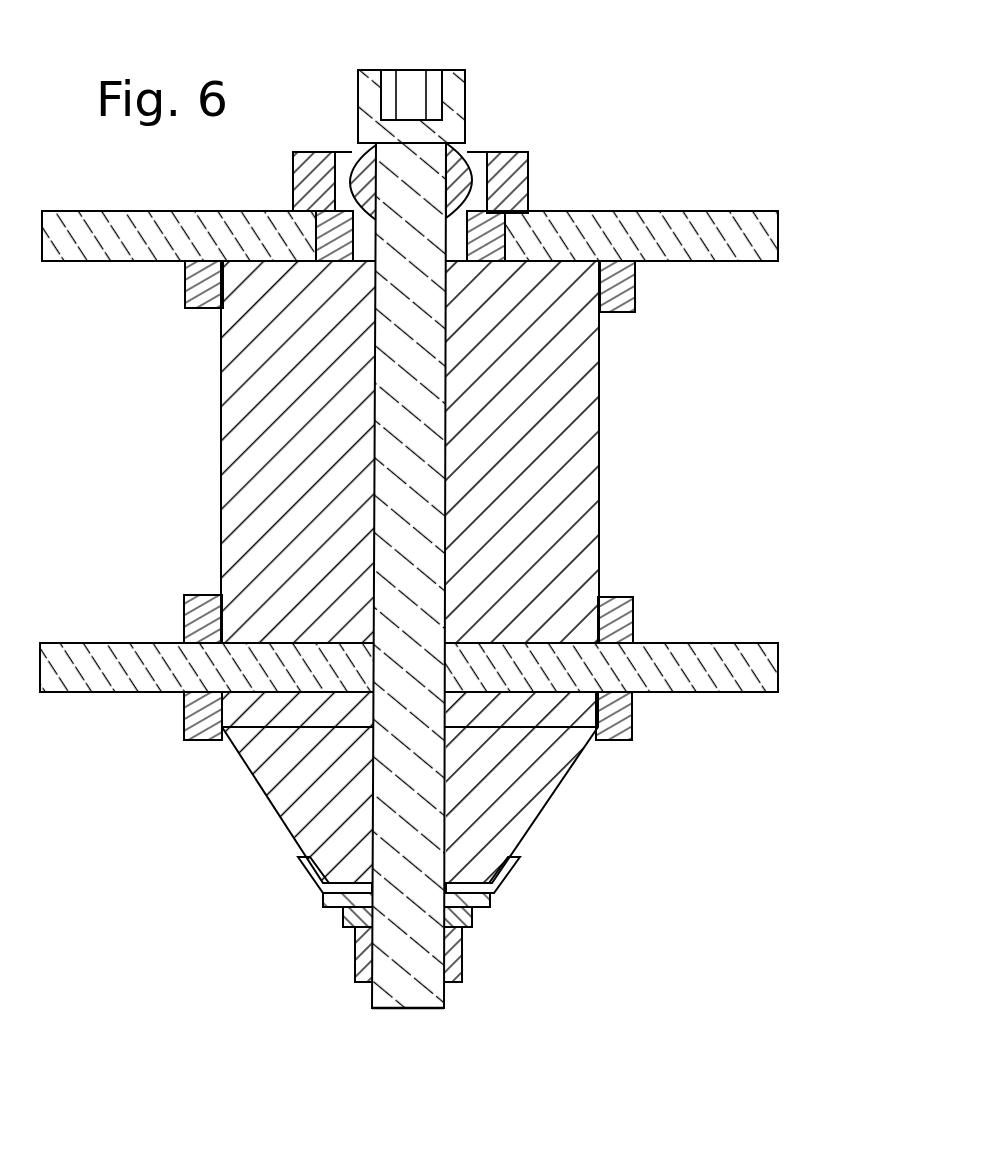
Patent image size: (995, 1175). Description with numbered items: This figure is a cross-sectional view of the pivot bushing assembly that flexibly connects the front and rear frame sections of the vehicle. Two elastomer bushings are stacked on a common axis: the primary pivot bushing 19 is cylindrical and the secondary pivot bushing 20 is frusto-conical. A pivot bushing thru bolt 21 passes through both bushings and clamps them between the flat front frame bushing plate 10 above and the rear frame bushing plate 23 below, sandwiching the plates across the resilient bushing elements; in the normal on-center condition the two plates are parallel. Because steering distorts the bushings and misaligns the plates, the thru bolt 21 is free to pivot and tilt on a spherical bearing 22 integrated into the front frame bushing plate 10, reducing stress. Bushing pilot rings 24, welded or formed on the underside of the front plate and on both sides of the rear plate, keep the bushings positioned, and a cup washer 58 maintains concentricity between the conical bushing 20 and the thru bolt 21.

The front frame bushing plate 10 is at (647, 217).
The pivot bushing (cylindrical) 19 is at (588, 458).
The pivot bushing (conical) 20 is at (547, 790).
The pivot bushing thru bolt 21 is at (455, 87).
The spherical bearing (thru bolt) 22 is at (467, 152).
The rear frame bushing plate 23 is at (697, 660).
The bushing pilot ring 24 is at (622, 287).
The cup washer 58 is at (503, 877).